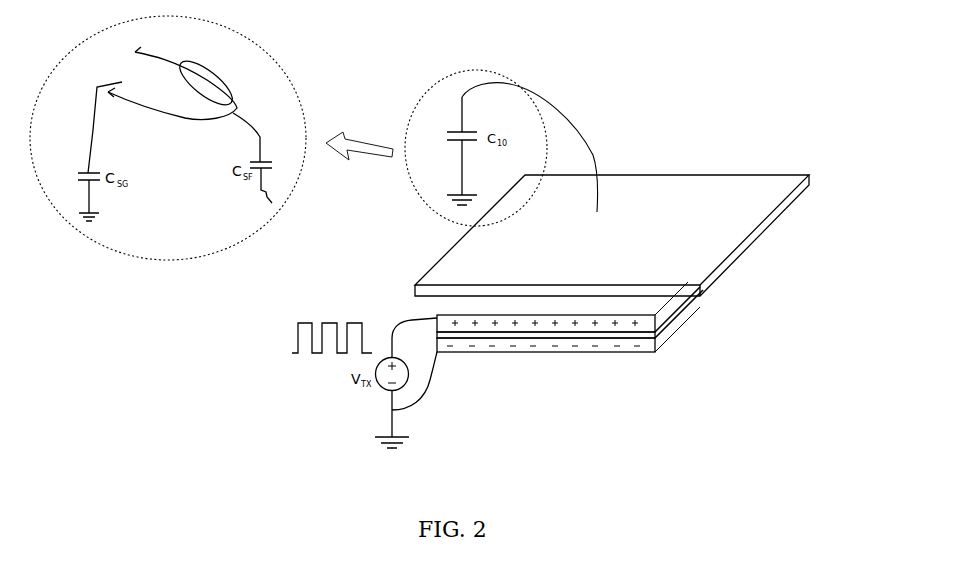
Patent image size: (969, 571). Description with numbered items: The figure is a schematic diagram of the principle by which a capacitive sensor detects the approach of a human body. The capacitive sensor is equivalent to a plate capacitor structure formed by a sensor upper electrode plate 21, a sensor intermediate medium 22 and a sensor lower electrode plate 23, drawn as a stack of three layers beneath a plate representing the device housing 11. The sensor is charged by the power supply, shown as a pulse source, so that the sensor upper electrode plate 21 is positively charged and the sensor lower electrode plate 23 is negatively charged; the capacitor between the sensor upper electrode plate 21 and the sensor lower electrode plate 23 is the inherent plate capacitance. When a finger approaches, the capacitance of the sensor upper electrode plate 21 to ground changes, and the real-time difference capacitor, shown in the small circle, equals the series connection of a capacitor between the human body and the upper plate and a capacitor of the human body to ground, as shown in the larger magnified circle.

The device housing 11 is at (753, 230).
The sensor upper electrode plate 21 is at (657, 318).
The sensor intermediate medium 22 is at (670, 338).
The sensor lower electrode plate 23 is at (656, 352).